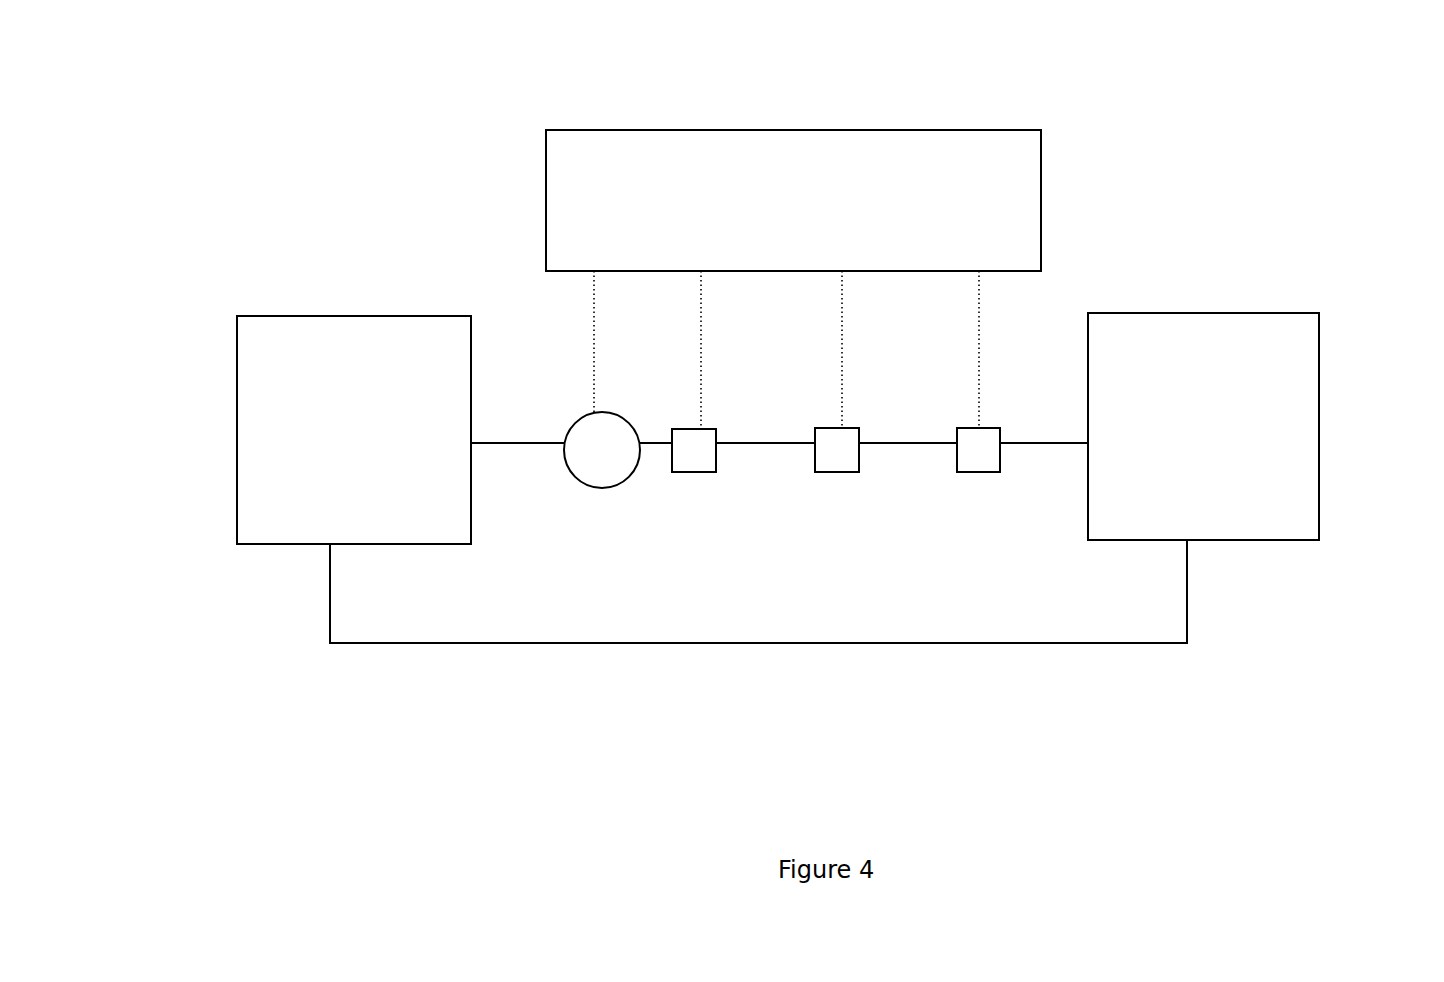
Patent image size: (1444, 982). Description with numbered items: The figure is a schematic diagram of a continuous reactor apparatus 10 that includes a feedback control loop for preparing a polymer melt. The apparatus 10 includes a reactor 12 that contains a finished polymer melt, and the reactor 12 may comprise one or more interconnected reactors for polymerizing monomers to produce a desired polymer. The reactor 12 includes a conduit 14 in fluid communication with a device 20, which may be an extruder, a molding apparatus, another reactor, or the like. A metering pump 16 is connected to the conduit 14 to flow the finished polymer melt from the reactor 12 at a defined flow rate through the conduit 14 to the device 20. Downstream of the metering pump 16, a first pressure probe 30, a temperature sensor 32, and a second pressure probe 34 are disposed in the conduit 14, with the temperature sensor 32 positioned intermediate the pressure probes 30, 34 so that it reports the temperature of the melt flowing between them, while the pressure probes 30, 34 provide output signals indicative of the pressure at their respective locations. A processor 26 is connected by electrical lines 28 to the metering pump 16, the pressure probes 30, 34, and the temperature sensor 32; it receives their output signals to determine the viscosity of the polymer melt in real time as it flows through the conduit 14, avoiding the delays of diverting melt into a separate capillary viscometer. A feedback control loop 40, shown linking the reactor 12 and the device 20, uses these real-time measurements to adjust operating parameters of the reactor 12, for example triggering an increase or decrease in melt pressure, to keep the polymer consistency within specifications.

The apparatus 10 is at (300, 96).
The reactor 12 is at (237, 460).
The conduit 14 is at (525, 445).
The metering pump 16 is at (603, 488).
The device 20 is at (1319, 412).
The processor 26 is at (1041, 170).
The electrical lines 28 is at (594, 330).
The pressure probe 30 is at (673, 427).
The temperature sensor 32 is at (815, 427).
The pressure probe 34 is at (957, 427).
The feedback control loop 40 is at (575, 643).